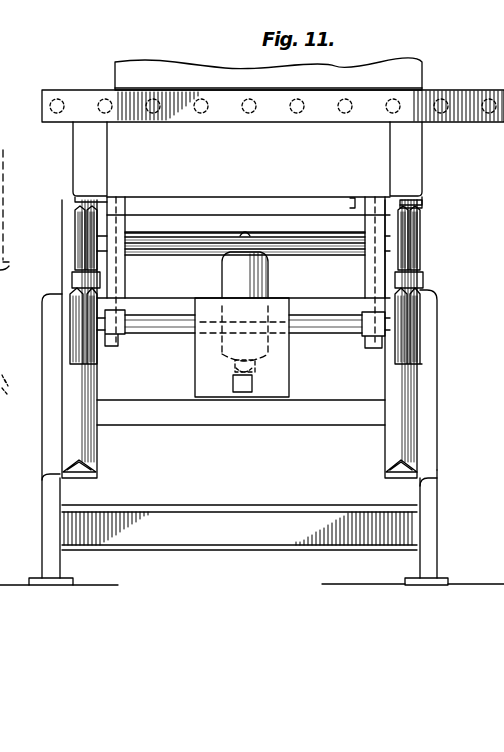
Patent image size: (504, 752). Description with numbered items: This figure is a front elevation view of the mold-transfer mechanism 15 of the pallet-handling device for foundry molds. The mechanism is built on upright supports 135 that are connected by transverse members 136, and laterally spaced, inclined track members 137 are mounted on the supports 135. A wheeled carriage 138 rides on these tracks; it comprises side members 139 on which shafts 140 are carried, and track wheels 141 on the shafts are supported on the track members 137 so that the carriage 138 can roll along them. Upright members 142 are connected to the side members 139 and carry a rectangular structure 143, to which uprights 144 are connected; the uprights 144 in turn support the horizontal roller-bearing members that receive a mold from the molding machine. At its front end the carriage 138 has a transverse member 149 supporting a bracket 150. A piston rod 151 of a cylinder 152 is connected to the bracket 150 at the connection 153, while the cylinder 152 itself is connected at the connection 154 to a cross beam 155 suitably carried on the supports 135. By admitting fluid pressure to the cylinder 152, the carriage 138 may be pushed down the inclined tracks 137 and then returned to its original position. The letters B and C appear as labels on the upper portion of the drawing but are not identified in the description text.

The top panel B is at (115, 74).
The perforated bar C is at (135, 88).
The mold-transfer mechanism 15 is at (450, 376).
The upright supports 135 is at (458, 533).
The transverse members 136 is at (188, 532).
The track members 137 is at (98, 459).
The wheeled carriage 138 is at (379, 262).
The side members 139 is at (119, 276).
The shafts 140 is at (352, 198).
The track wheels 141 is at (78, 308).
The upright members 142 is at (150, 198).
The rectangular structure 143 is at (414, 209).
The uprights 144 is at (103, 167).
The transverse member 149 is at (318, 312).
The bracket 150 is at (273, 379).
The piston rod 151 is at (232, 362).
The cylinder 152 is at (262, 282).
The connection of piston rod to bracket 153 is at (232, 394).
The connection of cylinder to cross beam 154 is at (263, 236).
The cross beam 155 is at (247, 232).